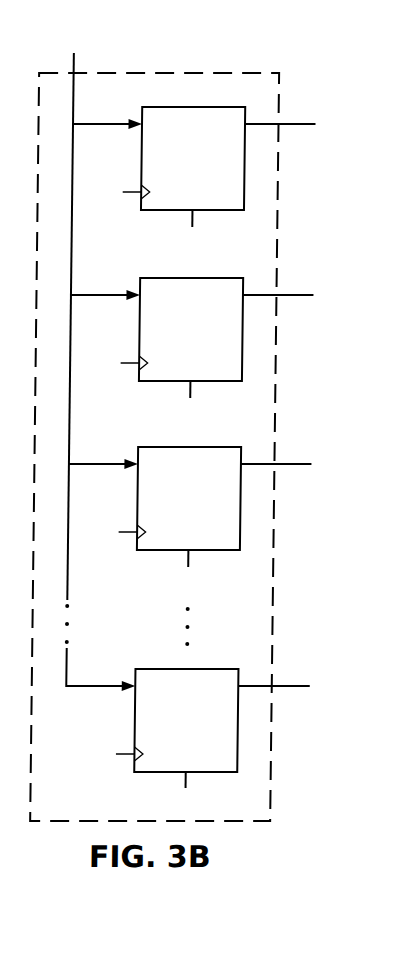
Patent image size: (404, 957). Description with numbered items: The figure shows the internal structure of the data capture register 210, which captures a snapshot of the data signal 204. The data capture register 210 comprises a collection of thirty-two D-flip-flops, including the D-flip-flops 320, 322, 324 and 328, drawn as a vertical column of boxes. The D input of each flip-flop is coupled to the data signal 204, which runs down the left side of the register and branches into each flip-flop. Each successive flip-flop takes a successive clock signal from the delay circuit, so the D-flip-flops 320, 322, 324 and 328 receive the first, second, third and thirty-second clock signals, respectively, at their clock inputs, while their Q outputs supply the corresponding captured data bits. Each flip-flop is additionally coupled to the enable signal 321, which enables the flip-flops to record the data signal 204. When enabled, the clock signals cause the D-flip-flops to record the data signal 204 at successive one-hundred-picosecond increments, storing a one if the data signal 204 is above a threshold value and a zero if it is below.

The data signal 204 is at (91, 343).
The data capture register 210 is at (280, 705).
The D-flip-flop 320 is at (217, 158).
The enable signal 321 is at (188, 512).
The D-flip-flop 322 is at (216, 329).
The D-flip-flop 324 is at (214, 498).
The D-flip-flop 328 is at (209, 720).